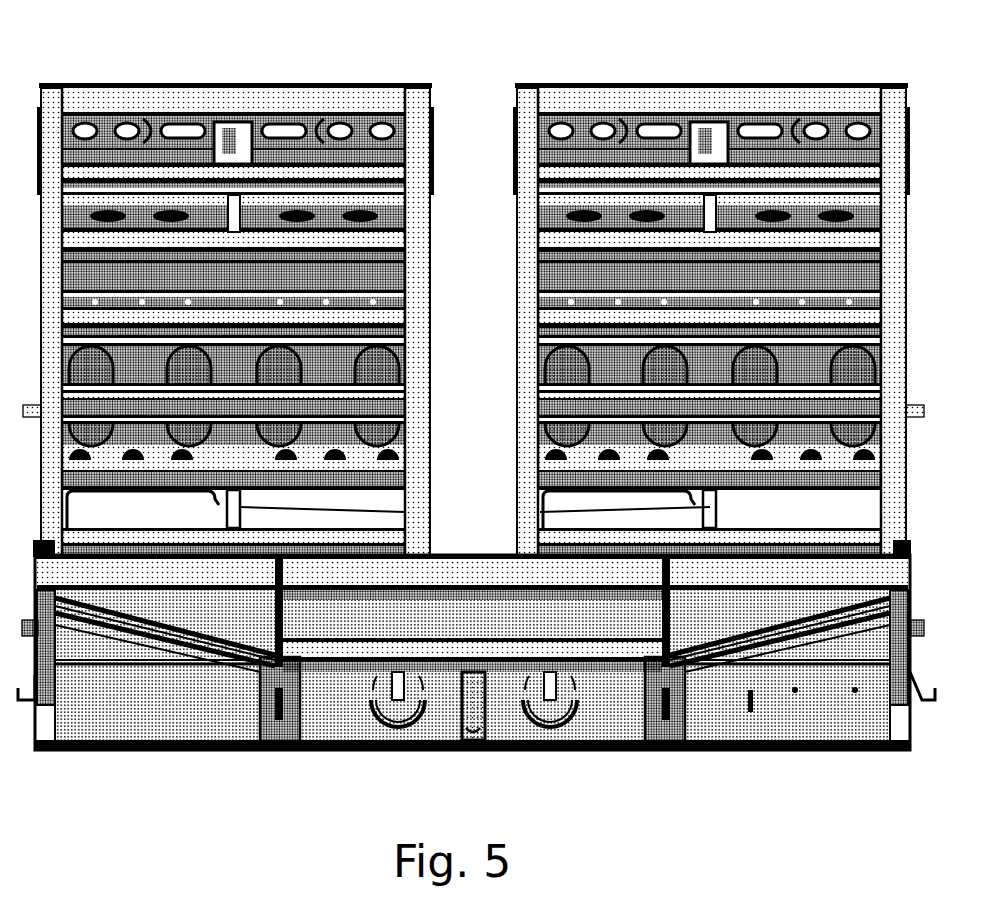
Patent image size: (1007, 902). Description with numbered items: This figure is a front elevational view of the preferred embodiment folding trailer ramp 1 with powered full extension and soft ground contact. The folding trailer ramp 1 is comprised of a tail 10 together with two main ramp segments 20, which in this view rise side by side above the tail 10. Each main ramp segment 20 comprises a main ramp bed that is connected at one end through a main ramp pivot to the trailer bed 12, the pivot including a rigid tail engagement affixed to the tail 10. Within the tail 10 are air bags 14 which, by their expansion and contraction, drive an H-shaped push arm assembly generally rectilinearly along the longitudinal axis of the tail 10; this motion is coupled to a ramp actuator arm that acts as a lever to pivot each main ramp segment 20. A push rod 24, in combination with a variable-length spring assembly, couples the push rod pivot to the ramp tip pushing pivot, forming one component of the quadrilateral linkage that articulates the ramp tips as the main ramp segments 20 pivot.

The folding trailer ramp 1 is at (476, 457).
The tail 10 is at (476, 684).
The trailer bed 12 is at (105, 712).
The air bags 14 is at (424, 720).
The main ramp segment 20 is at (473, 290).
The push rod 24 is at (710, 514).